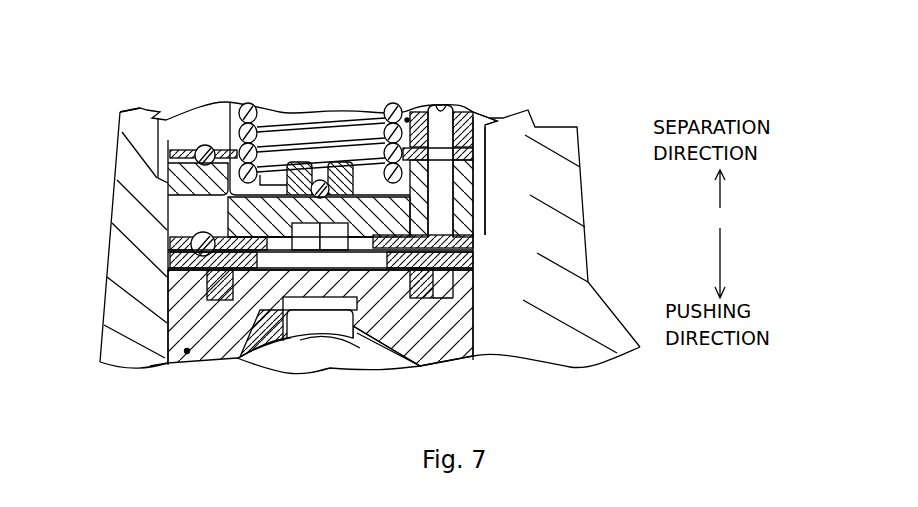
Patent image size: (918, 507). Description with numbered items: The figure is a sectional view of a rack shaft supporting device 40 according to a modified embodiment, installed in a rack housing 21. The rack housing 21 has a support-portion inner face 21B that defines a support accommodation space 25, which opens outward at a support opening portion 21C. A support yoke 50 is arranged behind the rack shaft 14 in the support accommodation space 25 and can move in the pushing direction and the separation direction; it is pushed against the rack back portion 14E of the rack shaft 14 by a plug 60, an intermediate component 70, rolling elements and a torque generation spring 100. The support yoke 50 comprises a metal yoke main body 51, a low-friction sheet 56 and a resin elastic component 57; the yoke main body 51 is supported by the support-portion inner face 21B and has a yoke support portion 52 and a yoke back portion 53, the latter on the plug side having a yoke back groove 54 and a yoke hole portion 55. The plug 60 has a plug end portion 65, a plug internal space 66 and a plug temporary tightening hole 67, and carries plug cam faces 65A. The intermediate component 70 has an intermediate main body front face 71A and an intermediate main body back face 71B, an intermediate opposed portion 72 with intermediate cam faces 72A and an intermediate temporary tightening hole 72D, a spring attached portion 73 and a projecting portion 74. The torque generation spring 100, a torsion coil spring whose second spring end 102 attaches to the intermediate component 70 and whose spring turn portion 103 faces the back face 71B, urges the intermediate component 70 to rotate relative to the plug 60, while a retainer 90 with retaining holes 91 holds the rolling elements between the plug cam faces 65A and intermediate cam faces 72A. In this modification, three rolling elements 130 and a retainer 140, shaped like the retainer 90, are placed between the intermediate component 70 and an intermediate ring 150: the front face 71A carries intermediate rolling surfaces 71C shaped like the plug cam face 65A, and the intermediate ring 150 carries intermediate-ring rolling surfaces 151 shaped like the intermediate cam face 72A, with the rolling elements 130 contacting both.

The rack shaft 14 is at (312, 362).
The rack back portion 14E is at (360, 356).
The rack housing 21 is at (102, 326).
The support-portion inner face 21B is at (170, 326).
The support opening portion 21C is at (120, 118).
The support accommodation space 25 is at (187, 353).
The rack shaft supporting device 40 is at (624, 72).
The support yoke 50 is at (492, 327).
The yoke main body 51 is at (165, 363).
The yoke support portion 52 is at (443, 362).
The yoke back portion 53 is at (470, 288).
The yoke back groove 54 is at (421, 300).
The yoke hole portion 55 is at (357, 300).
The low-friction sheet 56 is at (250, 357).
The resin elastic component 57 is at (216, 300).
The plug 60 is at (476, 104).
The plug end portion 65 is at (480, 122).
The plug cam face 65A is at (200, 147).
The plug internal space 66 is at (418, 114).
The plug temporary tightening hole 67 is at (442, 108).
The intermediate component 70 is at (490, 226).
The intermediate main body front face 71A is at (236, 244).
The intermediate main body back face 71B is at (420, 240).
The intermediate rolling surface 71C is at (208, 225).
The intermediate opposed portion 72 is at (471, 185).
The intermediate cam face 72A is at (172, 180).
The intermediate temporary tightening hole 72D is at (474, 212).
The spring attached portion 73 is at (342, 170).
The projecting portion 74 is at (353, 306).
The retainer 90 is at (475, 156).
The retaining hole 91 is at (206, 144).
The torque generation spring 100 is at (252, 98).
The second spring end 102 is at (318, 236).
The spring turn portion 103 is at (400, 113).
The rolling element 130 is at (172, 250).
The retainer 140 is at (475, 243).
The intermediate ring 150 is at (475, 264).
The intermediate-ring rolling surface 151 is at (200, 272).